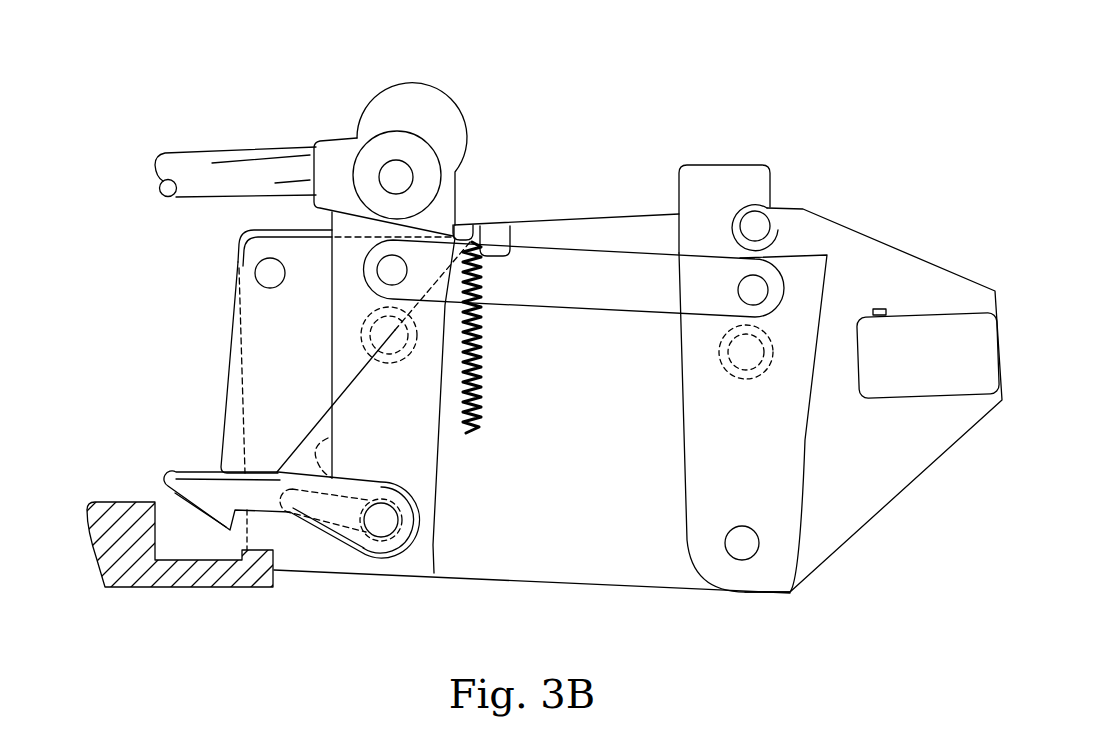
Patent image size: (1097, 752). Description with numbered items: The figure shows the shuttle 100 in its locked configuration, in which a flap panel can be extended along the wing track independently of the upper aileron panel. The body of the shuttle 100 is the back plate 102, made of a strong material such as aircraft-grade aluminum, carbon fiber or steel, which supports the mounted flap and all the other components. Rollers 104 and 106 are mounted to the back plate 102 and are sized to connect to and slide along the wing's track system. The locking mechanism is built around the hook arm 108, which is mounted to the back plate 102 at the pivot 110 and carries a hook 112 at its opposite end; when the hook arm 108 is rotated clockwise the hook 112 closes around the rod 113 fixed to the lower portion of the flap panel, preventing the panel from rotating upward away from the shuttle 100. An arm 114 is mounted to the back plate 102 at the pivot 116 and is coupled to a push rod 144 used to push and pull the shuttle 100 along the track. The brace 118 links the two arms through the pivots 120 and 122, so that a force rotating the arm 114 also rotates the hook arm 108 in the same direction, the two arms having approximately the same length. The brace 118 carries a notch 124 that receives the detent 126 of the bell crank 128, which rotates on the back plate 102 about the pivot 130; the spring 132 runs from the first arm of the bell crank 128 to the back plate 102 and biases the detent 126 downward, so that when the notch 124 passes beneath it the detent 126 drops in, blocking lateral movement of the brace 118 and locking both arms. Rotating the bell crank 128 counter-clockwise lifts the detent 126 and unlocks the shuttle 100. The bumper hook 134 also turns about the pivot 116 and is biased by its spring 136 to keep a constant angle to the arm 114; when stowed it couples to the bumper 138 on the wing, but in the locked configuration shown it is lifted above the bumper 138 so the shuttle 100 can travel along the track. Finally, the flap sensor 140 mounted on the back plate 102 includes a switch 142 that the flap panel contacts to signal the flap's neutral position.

The shuttle 100 is at (836, 76).
The back plate 102 is at (903, 477).
The roller 104 is at (717, 355).
The roller 106 is at (377, 343).
The hook arm 108 is at (703, 450).
The pivot 110 is at (743, 560).
The hook 112 is at (748, 226).
The rod 113 is at (745, 227).
The arm 114 is at (445, 445).
The pivot 116 is at (390, 525).
The brace 118 is at (607, 250).
The pivot 120 is at (377, 268).
The pivot 122 is at (760, 293).
The notch 124 is at (505, 222).
The detent 126 is at (476, 240).
The bell crank 128 is at (250, 362).
The pivot 130 is at (255, 276).
The spring 132 is at (480, 350).
The bumper hook 134 is at (173, 472).
The spring 136 is at (347, 478).
The bumper 138 is at (105, 502).
The flap sensor 140 is at (990, 362).
The switch 142 is at (890, 311).
The push rod 144 is at (233, 153).